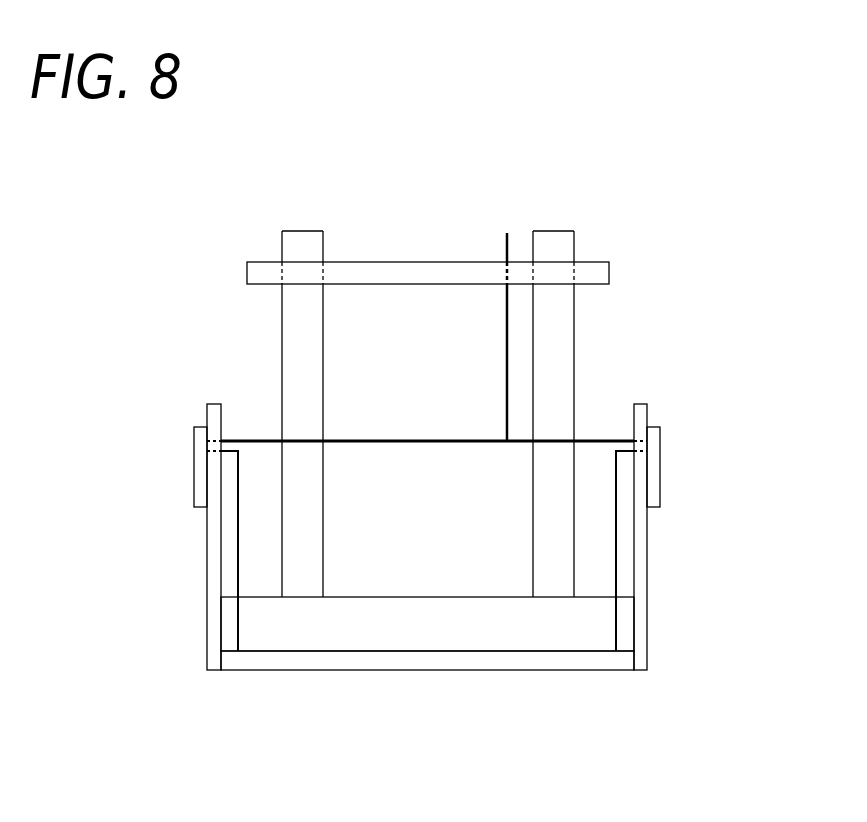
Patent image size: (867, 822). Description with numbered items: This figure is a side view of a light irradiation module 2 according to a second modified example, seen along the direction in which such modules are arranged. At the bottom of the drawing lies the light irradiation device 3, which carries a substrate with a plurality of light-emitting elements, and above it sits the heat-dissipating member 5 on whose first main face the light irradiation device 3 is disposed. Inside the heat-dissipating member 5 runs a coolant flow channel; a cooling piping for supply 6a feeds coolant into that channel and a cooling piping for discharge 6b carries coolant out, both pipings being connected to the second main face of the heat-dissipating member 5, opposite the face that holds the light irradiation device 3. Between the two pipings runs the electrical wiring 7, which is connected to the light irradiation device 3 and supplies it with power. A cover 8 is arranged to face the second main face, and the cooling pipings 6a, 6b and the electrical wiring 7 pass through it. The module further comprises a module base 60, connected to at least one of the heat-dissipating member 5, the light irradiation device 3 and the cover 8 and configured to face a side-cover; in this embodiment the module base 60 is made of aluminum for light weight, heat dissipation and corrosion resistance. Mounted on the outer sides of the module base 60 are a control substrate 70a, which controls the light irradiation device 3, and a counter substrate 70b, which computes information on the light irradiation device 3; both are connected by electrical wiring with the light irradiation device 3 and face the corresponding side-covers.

The light irradiation module 2 is at (552, 142).
The light irradiation device 3 is at (346, 662).
The heat-dissipating member 5 is at (295, 633).
The cooling piping for supply 6a is at (557, 243).
The cooling piping for discharge 6b is at (302, 245).
The electrical wiring 7 is at (506, 240).
The cover 8 is at (592, 275).
The module base 60 is at (213, 573).
The control substrate 70a is at (655, 442).
The counter substrate 70b is at (202, 442).